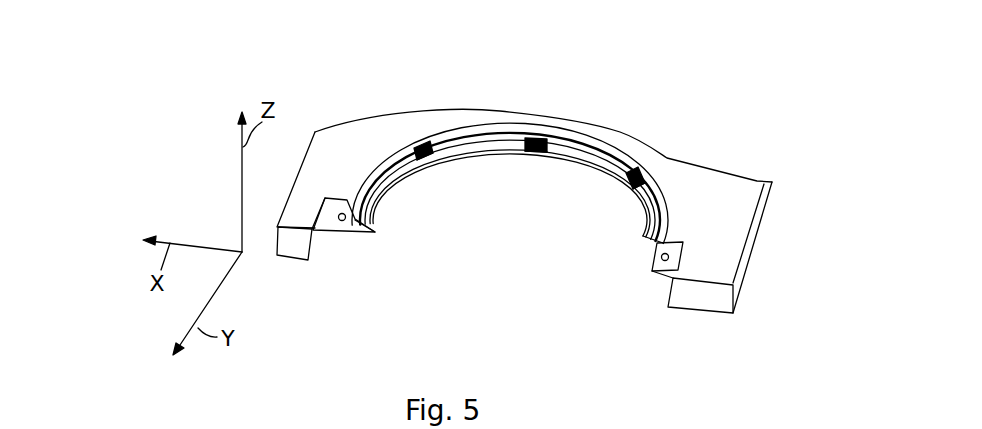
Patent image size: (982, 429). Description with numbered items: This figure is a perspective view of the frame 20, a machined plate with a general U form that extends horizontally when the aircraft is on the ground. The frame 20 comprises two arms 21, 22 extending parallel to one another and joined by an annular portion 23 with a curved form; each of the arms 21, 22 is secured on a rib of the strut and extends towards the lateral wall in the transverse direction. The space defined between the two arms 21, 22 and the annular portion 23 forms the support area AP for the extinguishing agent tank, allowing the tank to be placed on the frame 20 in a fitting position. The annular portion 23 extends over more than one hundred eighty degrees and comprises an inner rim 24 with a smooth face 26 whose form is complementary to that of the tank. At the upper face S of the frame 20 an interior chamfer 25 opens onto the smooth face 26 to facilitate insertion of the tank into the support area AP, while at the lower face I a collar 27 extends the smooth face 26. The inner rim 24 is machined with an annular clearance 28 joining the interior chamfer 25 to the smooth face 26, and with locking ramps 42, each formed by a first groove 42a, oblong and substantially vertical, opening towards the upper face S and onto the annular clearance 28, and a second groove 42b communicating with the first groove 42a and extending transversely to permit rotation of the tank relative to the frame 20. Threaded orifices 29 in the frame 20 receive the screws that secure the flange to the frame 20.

The frame 20 is at (703, 160).
The arm 21 is at (310, 170).
The arm 22 is at (728, 247).
The annular portion 23 is at (625, 138).
The inner rim 24 is at (477, 166).
The interior chamfer 25 is at (402, 138).
The smooth face 26 is at (398, 163).
The collar 27 is at (648, 255).
The annular clearance 28 is at (378, 147).
The threaded orifice 29 is at (342, 222).
The locking ramp 42 is at (427, 168).
The first groove 42a is at (425, 143).
The second groove 42b is at (432, 140).
The support area AP is at (512, 184).
The upper face S is at (740, 193).
The lower face I is at (703, 313).